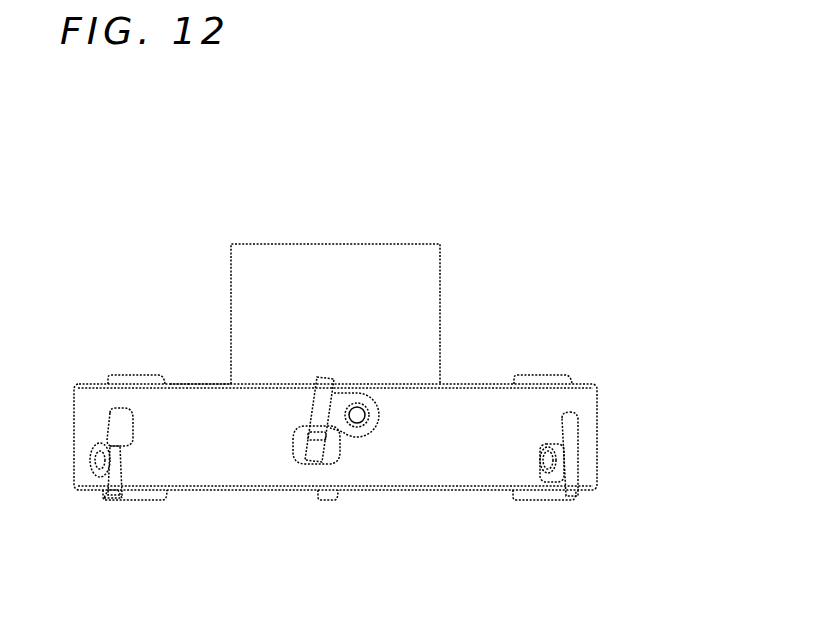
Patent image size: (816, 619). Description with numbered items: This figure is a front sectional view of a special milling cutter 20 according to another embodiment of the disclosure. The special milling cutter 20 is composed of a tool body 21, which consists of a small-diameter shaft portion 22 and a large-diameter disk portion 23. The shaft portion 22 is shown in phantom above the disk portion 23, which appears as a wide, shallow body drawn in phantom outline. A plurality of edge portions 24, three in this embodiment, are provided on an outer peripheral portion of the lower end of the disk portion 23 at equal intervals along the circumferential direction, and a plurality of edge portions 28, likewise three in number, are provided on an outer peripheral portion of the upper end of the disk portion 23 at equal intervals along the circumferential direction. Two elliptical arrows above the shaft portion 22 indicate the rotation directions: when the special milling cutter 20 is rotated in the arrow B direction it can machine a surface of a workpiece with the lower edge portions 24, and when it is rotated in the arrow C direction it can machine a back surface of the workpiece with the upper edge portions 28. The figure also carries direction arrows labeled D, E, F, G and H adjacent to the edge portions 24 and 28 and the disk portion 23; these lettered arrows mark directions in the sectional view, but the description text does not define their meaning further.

The special milling cutter 20 is at (96, 273).
The tool body 21 is at (578, 306).
The small-diameter shaft portion 22 is at (430, 269).
The large-diameter disk portion 23 is at (196, 383).
The edge portions 24 is at (145, 500).
The edge portions 28 is at (135, 378).
The arrow B direction B is at (280, 130).
The arrow C direction C is at (310, 172).
The direction D is at (585, 498).
The direction E is at (522, 517).
The direction F is at (668, 381).
The direction G is at (335, 378).
The direction H is at (378, 382).